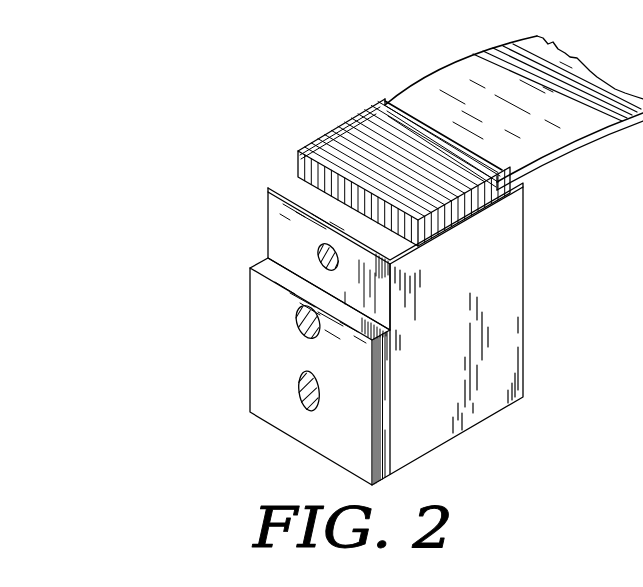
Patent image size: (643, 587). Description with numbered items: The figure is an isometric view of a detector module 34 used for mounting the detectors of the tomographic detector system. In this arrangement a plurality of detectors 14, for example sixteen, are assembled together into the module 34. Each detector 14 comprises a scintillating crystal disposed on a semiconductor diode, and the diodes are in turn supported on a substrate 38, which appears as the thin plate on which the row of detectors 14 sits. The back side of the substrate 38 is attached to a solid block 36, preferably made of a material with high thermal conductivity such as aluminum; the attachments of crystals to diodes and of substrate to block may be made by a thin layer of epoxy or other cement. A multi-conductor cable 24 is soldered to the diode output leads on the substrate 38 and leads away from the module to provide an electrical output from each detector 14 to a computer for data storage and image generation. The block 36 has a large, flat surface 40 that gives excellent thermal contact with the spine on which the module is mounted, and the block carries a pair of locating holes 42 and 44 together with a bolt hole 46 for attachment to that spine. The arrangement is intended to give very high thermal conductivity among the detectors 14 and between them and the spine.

The detector 14 is at (318, 181).
The multi-conductor cable 24 is at (574, 149).
The module 34 is at (501, 467).
The solid block 36 is at (511, 269).
The substrate 38 is at (416, 263).
The flat surface 40 is at (318, 436).
The locating hole 42 is at (298, 386).
The locating hole 44 is at (297, 322).
The bolt hole 46 is at (318, 252).